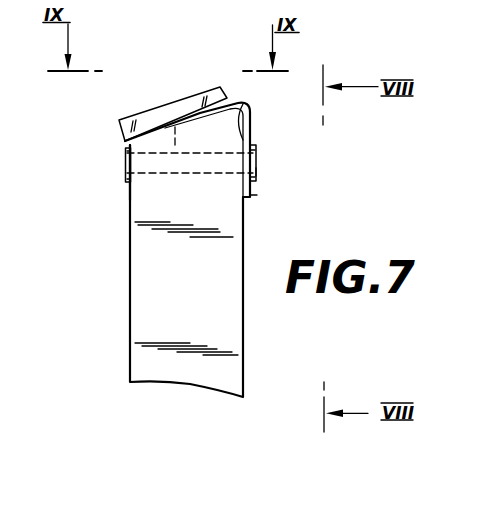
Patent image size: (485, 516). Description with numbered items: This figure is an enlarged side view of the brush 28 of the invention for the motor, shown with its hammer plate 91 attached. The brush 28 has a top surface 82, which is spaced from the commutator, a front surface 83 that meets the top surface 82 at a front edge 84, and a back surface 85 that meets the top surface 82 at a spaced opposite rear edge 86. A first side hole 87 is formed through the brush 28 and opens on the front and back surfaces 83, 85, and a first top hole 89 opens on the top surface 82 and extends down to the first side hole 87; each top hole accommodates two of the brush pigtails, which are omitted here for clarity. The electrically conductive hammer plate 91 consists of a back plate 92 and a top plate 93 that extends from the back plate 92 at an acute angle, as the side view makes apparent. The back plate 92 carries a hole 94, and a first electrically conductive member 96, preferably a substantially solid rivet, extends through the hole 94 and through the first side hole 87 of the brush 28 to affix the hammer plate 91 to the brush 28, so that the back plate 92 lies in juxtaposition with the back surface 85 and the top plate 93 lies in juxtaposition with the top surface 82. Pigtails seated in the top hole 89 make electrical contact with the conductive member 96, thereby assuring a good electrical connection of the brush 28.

The brush 28 is at (142, 307).
The top surface 82 is at (158, 126).
The front surface 83 is at (122, 245).
The front edge 84 is at (125, 142).
The back surface 85 is at (252, 227).
The rear edge 86 is at (256, 147).
The first side hole 87 is at (163, 152).
The first top hole 89 is at (178, 143).
The hammer plate 91 is at (250, 102).
The back plate 92 is at (251, 122).
The top plate 93 is at (187, 118).
The hole 94 is at (258, 193).
The first electrically conductive member 96 is at (257, 170).